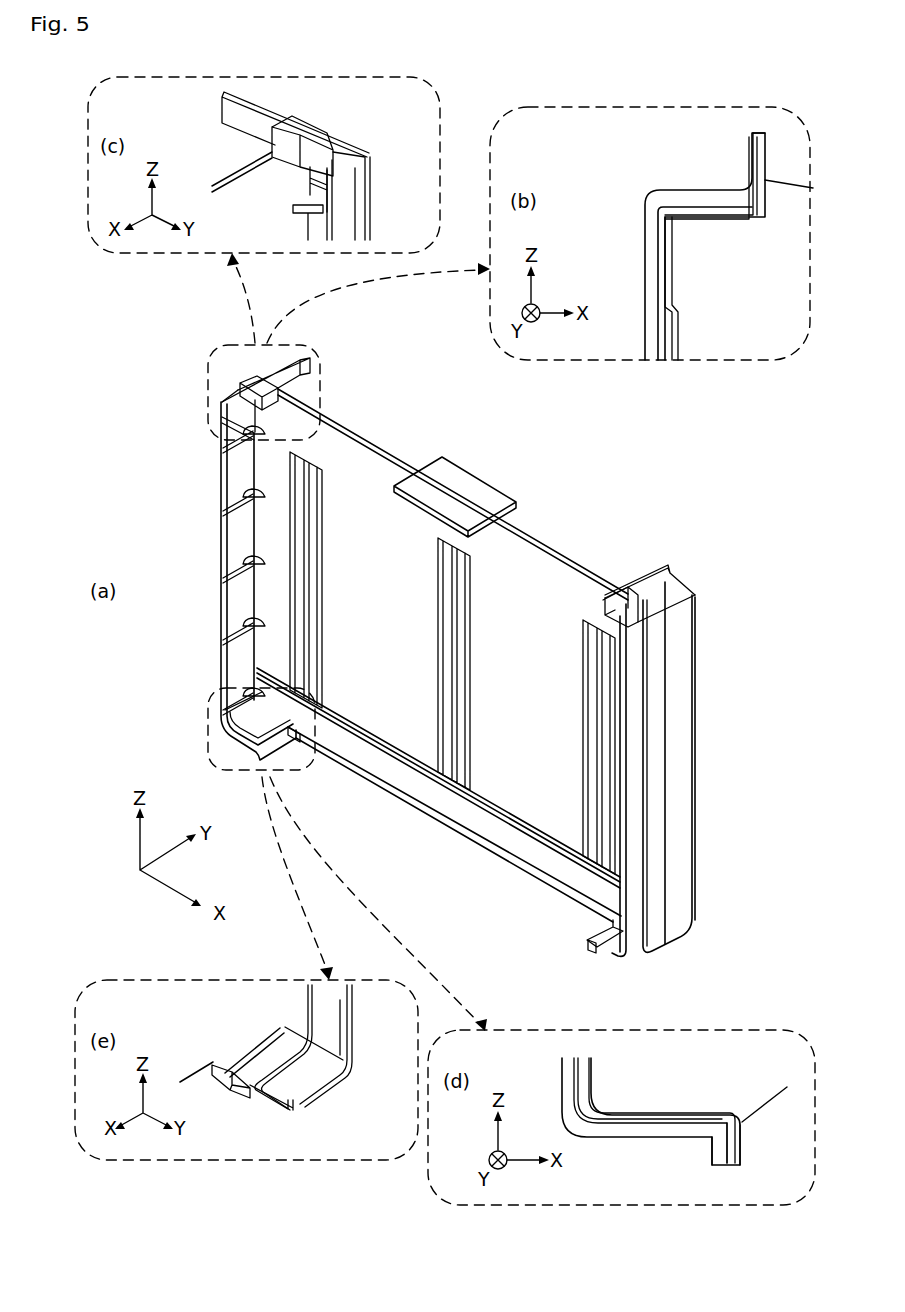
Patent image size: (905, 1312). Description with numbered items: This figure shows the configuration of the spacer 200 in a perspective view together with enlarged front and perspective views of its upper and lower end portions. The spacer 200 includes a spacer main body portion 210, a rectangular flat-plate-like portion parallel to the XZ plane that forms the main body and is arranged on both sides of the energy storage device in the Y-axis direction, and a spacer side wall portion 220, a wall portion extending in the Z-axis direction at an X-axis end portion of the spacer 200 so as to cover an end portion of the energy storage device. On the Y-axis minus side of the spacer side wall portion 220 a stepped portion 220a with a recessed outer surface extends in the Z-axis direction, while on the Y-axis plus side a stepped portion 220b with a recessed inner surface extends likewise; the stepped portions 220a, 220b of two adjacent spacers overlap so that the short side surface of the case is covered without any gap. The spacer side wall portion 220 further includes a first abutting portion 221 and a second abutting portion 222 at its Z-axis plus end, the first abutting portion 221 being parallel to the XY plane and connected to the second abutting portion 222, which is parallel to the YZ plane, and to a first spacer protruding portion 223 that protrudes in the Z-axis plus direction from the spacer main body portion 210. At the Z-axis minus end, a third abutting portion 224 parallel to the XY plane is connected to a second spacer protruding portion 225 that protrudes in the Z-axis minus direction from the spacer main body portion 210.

The spacer 200 is at (680, 456).
The spacer main body portion 210 is at (532, 538).
The spacer side wall portion 220 is at (220, 492).
The stepped portion 220a is at (636, 793).
The stepped portion 220b is at (348, 215).
The first abutting portion 221 is at (233, 392).
The second abutting portion 222 is at (218, 418).
The first spacer protruding portion 223 is at (278, 392).
The third abutting portion 224 is at (238, 742).
The second spacer protruding portion 225 is at (290, 752).